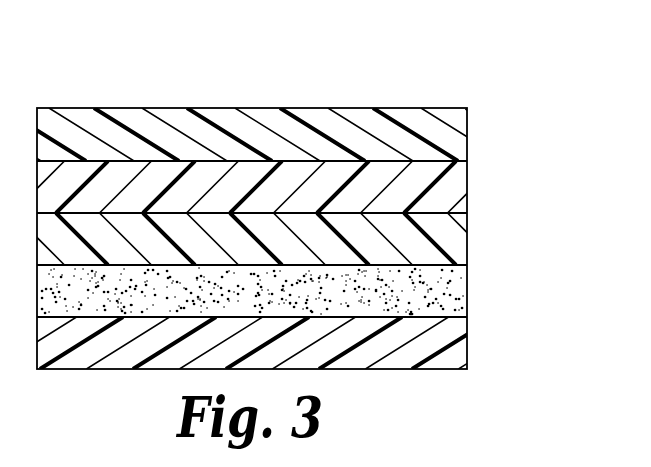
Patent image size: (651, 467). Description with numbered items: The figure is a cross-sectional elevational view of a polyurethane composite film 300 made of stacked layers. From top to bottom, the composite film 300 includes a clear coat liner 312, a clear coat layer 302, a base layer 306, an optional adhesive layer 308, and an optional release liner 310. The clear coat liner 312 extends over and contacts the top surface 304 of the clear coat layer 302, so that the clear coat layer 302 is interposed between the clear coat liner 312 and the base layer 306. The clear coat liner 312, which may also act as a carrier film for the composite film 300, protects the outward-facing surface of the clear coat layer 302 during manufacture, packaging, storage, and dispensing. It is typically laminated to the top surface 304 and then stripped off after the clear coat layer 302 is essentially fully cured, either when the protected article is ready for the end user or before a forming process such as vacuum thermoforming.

The composite film 300 is at (490, 47).
The clear coat layer 302 is at (453, 190).
The top surface 304 is at (452, 151).
The base layer 306 is at (453, 243).
The adhesive layer 308 is at (453, 297).
The release liner 310 is at (453, 353).
The clear coat liner 312 is at (435, 128).